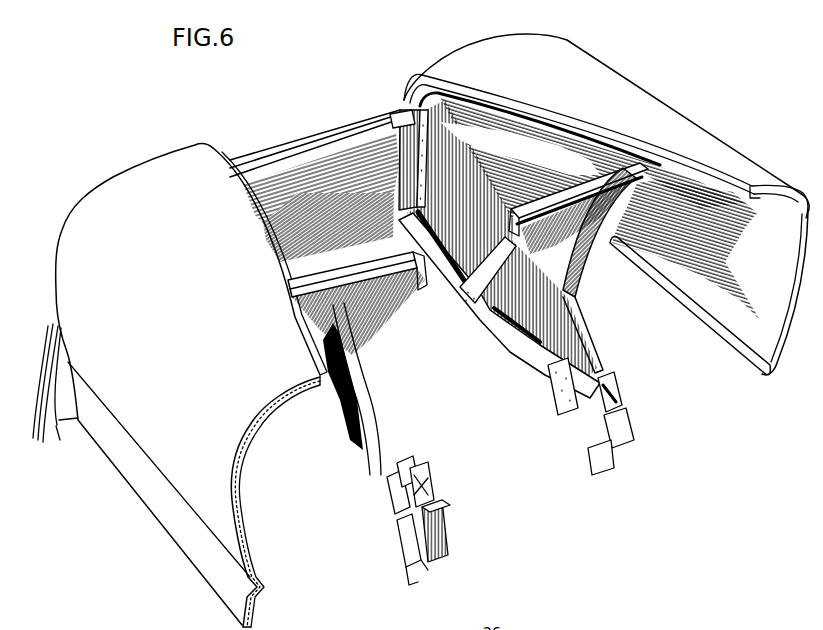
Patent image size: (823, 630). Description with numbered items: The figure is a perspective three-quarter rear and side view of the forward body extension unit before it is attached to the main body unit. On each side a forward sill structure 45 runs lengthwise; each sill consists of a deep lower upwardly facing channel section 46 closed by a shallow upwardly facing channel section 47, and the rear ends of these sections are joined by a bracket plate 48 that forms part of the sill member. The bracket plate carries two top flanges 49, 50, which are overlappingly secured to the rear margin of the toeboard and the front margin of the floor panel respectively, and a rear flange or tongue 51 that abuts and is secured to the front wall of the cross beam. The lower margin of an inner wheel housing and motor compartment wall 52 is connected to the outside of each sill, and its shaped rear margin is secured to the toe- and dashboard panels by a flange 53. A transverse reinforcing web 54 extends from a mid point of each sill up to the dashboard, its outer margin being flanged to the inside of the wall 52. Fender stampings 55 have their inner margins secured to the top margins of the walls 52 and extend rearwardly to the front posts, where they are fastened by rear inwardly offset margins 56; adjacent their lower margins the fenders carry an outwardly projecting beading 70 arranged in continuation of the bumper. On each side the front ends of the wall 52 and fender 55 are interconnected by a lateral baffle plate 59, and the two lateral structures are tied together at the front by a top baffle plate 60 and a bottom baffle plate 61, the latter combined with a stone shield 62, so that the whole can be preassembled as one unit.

The forward sill structure 45 is at (498, 361).
The deep lower upwardly facing channel section 46 is at (412, 492).
The shallow upwardly facing channel section 47 is at (405, 468).
The bracket plate 48 is at (432, 518).
The top flange 49 is at (392, 490).
The top flange 50 is at (404, 532).
The rear flange 51 is at (440, 555).
The inner wheel housing and motor compartment wall 52 is at (569, 282).
The flange 53 is at (585, 332).
The transverse reinforcing web 54 is at (361, 275).
The fender stamping 55 is at (135, 172).
The rear inwardly offset margin 56 is at (242, 473).
The baffle plate 59 is at (408, 110).
The top baffle plate 60 is at (282, 150).
The bottom baffle plate 61 is at (303, 260).
The stone shield 62 is at (55, 436).
The outwardly projecting beading 70 is at (200, 568).